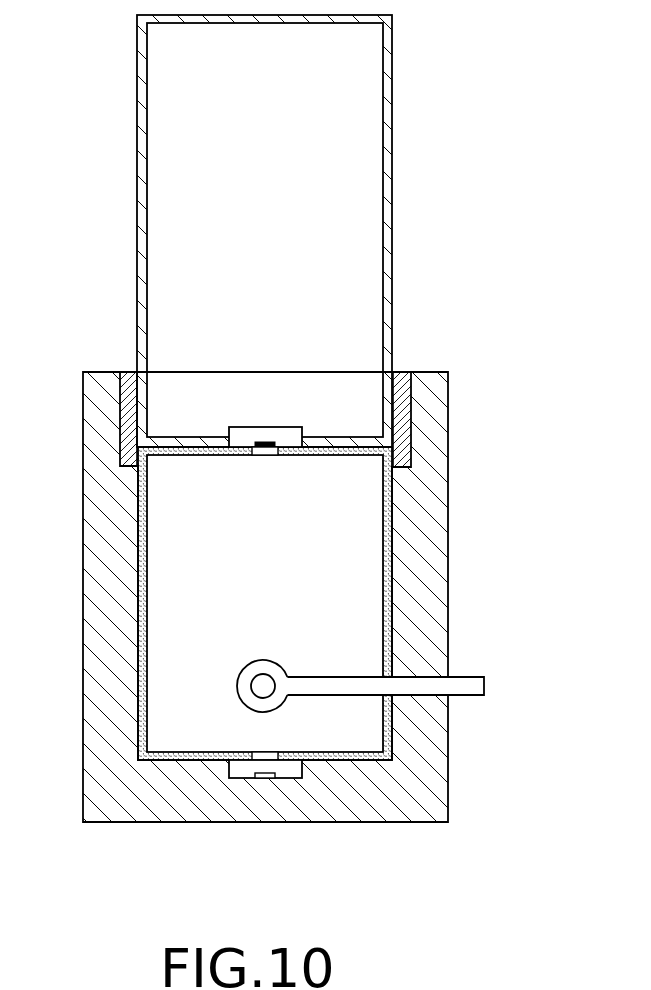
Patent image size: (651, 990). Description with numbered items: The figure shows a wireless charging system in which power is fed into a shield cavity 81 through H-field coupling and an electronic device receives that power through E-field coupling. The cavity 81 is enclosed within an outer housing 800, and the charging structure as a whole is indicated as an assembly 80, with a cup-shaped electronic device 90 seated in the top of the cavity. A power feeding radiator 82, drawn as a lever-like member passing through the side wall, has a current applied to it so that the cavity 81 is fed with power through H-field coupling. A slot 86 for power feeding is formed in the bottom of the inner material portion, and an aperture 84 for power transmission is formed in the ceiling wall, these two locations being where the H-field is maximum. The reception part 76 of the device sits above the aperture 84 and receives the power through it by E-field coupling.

The cup 90 is at (408, 141).
The reception part 76 is at (270, 411).
The aperture 84 is at (263, 453).
The cavity 81 is at (167, 618).
The radiator 82 is at (323, 677).
The heating assembly 80 is at (307, 615).
The housing 800 is at (476, 765).
The slot 86 is at (263, 753).